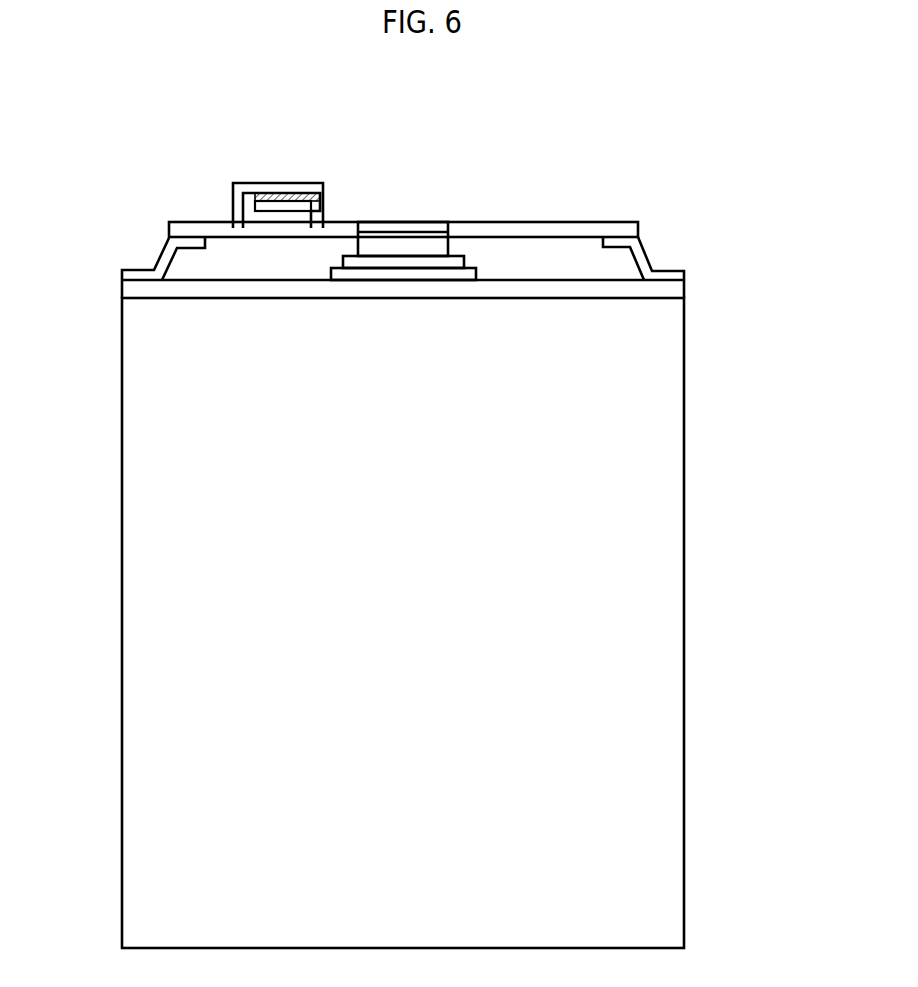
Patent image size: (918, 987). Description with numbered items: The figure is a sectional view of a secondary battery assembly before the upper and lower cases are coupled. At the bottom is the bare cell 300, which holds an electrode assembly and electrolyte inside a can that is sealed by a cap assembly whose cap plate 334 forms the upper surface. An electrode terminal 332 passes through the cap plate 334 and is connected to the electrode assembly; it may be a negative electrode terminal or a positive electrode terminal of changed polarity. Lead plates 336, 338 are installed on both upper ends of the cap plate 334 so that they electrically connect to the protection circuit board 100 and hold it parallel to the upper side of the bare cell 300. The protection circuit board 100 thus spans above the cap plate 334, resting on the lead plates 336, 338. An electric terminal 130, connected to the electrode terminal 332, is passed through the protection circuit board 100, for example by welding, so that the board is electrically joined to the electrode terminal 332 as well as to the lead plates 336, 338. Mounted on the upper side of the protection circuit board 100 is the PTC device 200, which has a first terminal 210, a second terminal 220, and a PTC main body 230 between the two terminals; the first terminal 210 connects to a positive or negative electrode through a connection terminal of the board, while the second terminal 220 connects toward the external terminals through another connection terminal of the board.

The protection circuit board 100 is at (610, 228).
The electric terminal 130 is at (383, 245).
The PTC device 200 is at (277, 161).
The first terminal 210 is at (262, 183).
The second terminal 220 is at (320, 211).
The PTC main body 230 is at (307, 192).
The bare cell 300 is at (675, 530).
The electrode terminal 332 is at (415, 262).
The cap plate 334 is at (675, 290).
The lead plate 336 is at (162, 262).
The lead plate 338 is at (640, 258).